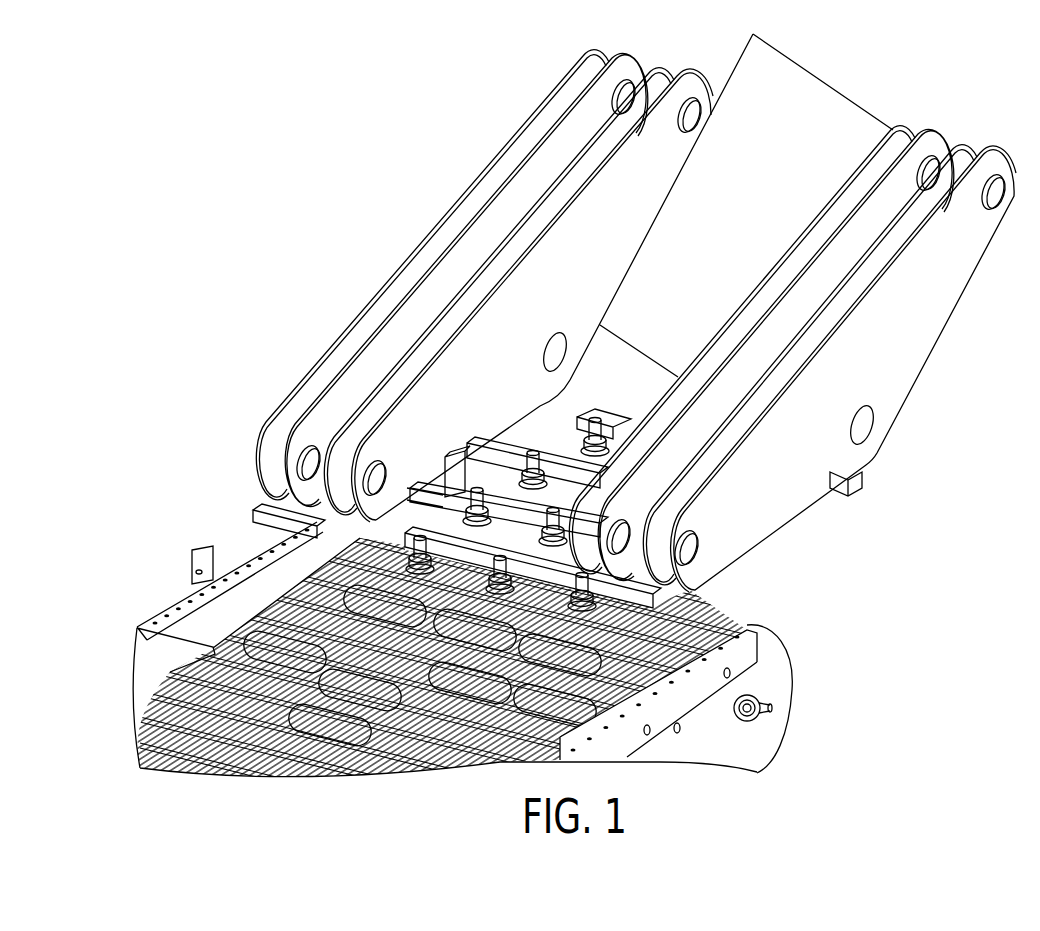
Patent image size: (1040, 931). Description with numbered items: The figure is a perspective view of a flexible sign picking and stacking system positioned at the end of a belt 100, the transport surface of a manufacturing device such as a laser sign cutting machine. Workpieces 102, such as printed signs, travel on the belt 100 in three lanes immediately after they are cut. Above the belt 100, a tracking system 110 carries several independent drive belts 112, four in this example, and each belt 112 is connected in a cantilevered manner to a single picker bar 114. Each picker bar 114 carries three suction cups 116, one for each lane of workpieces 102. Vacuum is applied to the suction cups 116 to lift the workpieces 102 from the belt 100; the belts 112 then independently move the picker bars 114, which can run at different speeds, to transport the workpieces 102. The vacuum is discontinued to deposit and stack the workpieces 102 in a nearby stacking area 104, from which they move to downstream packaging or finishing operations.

The belt 100 is at (247, 743).
The workpieces 102 is at (334, 636).
The stacking area 104 is at (870, 101).
The tracking system 110 is at (893, 353).
The belts 112 is at (962, 172).
The picker bars 114 is at (630, 415).
The suction cups 116 is at (604, 602).